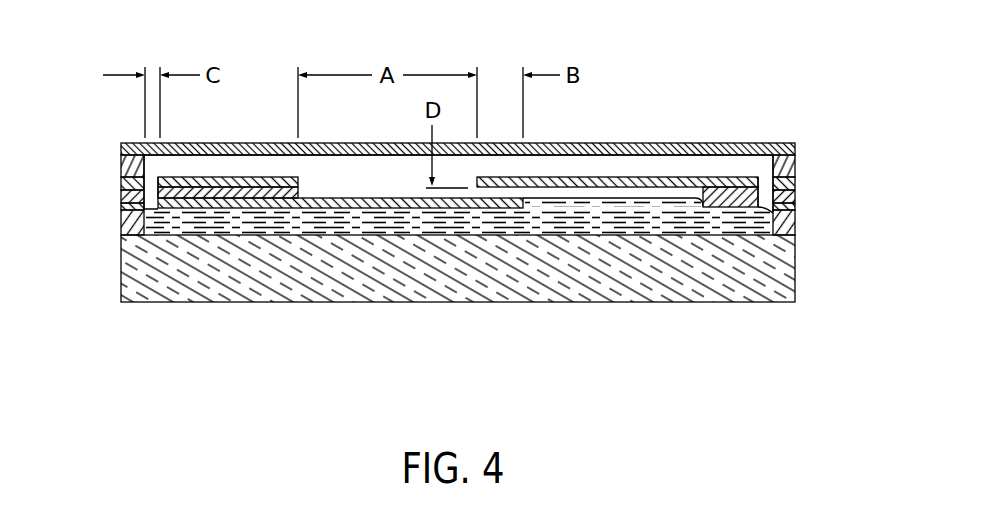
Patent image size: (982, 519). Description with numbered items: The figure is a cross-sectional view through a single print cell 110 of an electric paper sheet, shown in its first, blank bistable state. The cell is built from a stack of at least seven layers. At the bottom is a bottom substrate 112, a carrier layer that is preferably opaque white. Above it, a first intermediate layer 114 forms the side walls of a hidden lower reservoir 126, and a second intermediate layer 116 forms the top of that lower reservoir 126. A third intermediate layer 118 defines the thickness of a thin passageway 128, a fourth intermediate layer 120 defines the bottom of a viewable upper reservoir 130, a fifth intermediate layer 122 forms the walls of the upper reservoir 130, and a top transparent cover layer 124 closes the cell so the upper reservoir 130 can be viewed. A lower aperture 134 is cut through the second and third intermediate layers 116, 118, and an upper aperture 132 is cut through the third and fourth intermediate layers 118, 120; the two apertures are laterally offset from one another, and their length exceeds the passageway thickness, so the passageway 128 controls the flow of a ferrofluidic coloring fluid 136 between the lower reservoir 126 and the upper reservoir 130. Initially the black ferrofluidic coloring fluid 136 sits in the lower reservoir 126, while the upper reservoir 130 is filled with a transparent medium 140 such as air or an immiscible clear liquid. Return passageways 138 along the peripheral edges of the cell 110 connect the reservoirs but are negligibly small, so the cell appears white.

The print cell 110 is at (283, 136).
The bottom substrate 112 is at (796, 276).
The first intermediate layer 114 is at (796, 231).
The second intermediate layer 116 is at (796, 204).
The third intermediate layer 118 is at (796, 192).
The fourth intermediate layer 120 is at (796, 181).
The fifth intermediate layer 122 is at (796, 165).
The top transparent cover layer 124 is at (708, 142).
The lower reservoir 126 is at (336, 226).
The passageway 128 is at (507, 190).
The upper reservoir 130 is at (193, 166).
The upper aperture 132 is at (343, 184).
The lower aperture 134 is at (615, 188).
The ferrofluidic coloring fluid 136 is at (540, 226).
The return passageway 138 is at (151, 182).
The transparent medium 140 is at (583, 163).